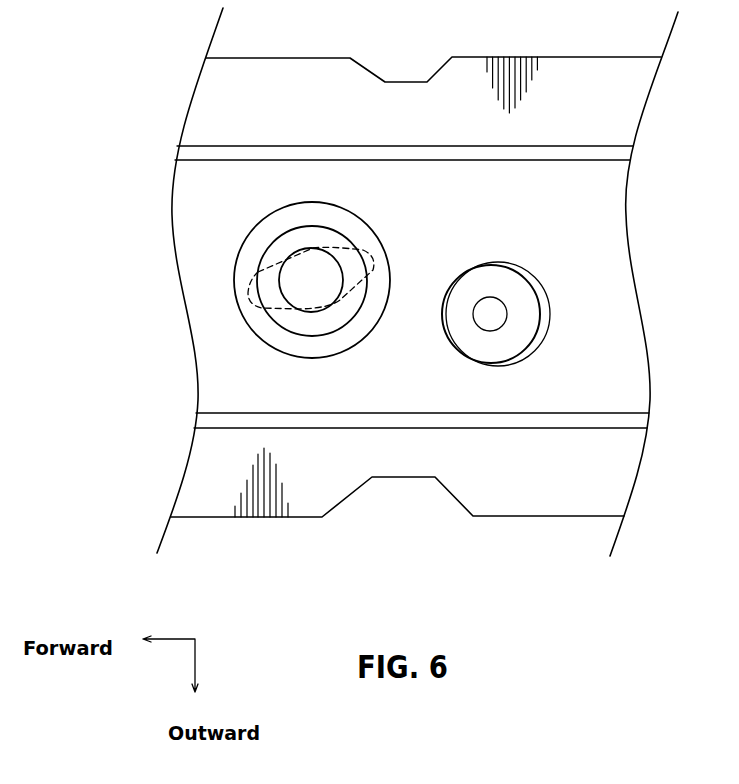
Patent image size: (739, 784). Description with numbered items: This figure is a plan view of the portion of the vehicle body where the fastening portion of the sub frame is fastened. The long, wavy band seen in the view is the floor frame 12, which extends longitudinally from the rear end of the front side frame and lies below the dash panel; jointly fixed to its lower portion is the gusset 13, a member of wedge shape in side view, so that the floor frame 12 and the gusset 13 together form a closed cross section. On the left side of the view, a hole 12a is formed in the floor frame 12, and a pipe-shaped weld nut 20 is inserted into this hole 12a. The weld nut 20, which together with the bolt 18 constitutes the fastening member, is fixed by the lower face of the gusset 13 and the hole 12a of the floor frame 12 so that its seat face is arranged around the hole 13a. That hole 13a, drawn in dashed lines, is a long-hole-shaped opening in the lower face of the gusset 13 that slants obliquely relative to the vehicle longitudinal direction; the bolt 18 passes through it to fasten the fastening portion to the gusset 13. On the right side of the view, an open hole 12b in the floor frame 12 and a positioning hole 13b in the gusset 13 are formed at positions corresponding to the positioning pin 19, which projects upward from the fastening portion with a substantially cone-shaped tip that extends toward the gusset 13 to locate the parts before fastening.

The floor frame 12 is at (208, 171).
The gusset 13 is at (207, 209).
The hole 12a is at (235, 305).
The open hole 12b is at (552, 307).
The hole 13a is at (258, 272).
The positioning hole 13b is at (527, 345).
The bolt 18 is at (314, 265).
The positioning pin 19 is at (490, 280).
The weld nut 20 is at (260, 240).